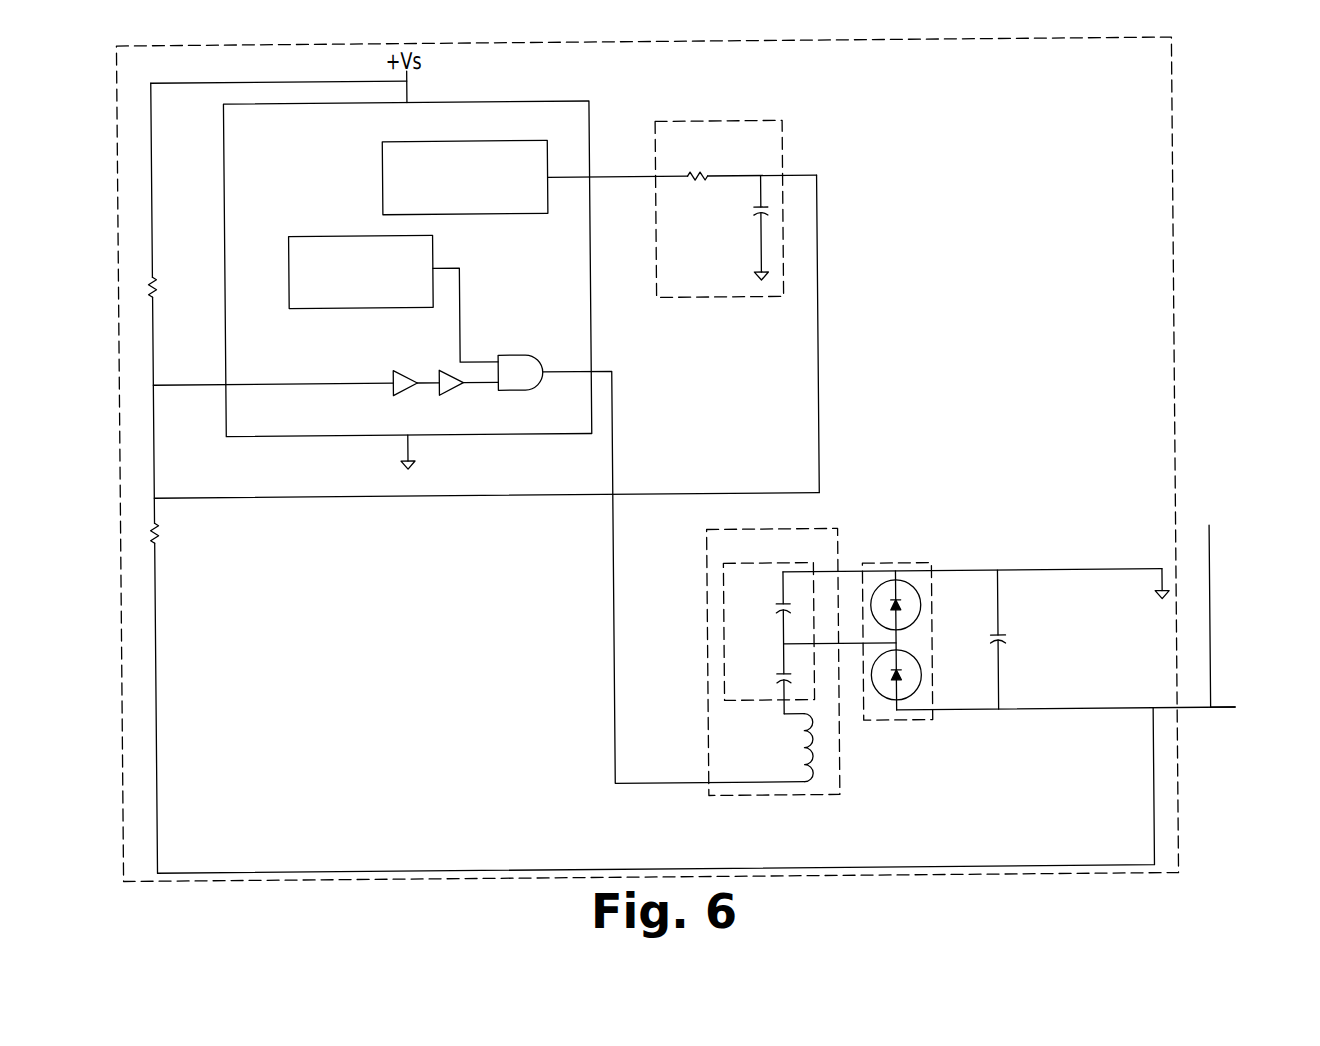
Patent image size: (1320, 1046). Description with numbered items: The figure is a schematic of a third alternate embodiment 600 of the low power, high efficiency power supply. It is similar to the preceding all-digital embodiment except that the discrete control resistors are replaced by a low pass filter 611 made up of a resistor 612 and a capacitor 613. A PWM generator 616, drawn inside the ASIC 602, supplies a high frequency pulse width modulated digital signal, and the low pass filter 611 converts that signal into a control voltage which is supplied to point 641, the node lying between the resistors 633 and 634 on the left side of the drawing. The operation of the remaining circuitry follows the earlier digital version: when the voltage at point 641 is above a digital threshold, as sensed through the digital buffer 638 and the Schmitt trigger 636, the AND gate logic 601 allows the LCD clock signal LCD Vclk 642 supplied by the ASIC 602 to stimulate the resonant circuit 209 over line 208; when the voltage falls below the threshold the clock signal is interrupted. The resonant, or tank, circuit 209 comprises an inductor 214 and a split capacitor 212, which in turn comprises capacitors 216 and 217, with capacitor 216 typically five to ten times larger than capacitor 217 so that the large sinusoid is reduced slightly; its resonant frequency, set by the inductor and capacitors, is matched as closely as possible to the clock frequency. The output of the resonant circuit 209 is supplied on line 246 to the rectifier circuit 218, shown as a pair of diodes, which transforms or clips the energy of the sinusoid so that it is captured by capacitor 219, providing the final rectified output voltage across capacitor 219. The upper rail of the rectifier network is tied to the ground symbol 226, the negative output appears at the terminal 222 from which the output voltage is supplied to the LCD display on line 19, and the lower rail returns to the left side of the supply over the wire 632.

The third alternate embodiment of the power supply 600 is at (1150, 76).
The ASIC 602 is at (275, 138).
The PWM generator 616 is at (469, 213).
The LCD Vclk block 642 is at (331, 302).
The buffer 638 is at (379, 371).
The buffer 636 is at (444, 391).
The AND gate 601 is at (511, 389).
The resistor 633 is at (182, 264).
The resistor 634 is at (182, 533).
The point 641 is at (155, 458).
The low pass filter 611 is at (778, 150).
The resistor 612 is at (709, 170).
The capacitor 613 is at (759, 213).
The line 208 is at (612, 607).
The resonant circuit 209 is at (753, 558).
The split capacitor 212 is at (768, 594).
The capacitor 216 is at (782, 609).
The capacitor 217 is at (782, 681).
The inductor 214 is at (785, 748).
The rectifier circuit 218 is at (931, 644).
The capacitor 219 is at (1001, 643).
The ground 226 is at (1161, 583).
The line 19 is at (1209, 552).
The negative LCD voltage terminal 222 is at (1225, 712).
The line 246 is at (848, 645).
The return wire 632 is at (955, 870).